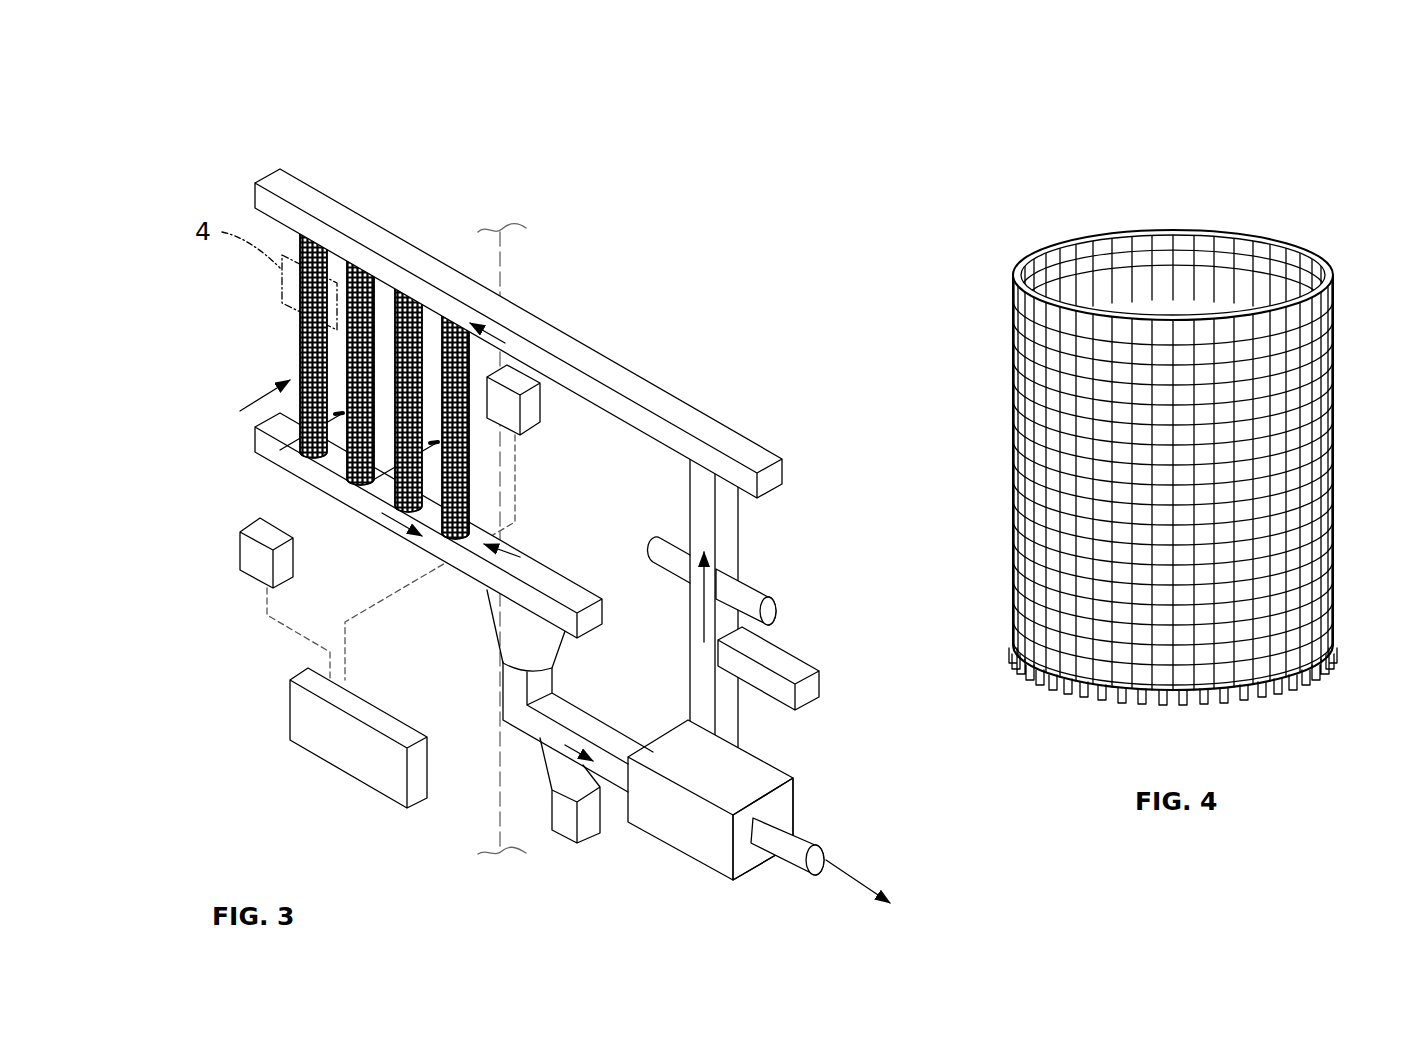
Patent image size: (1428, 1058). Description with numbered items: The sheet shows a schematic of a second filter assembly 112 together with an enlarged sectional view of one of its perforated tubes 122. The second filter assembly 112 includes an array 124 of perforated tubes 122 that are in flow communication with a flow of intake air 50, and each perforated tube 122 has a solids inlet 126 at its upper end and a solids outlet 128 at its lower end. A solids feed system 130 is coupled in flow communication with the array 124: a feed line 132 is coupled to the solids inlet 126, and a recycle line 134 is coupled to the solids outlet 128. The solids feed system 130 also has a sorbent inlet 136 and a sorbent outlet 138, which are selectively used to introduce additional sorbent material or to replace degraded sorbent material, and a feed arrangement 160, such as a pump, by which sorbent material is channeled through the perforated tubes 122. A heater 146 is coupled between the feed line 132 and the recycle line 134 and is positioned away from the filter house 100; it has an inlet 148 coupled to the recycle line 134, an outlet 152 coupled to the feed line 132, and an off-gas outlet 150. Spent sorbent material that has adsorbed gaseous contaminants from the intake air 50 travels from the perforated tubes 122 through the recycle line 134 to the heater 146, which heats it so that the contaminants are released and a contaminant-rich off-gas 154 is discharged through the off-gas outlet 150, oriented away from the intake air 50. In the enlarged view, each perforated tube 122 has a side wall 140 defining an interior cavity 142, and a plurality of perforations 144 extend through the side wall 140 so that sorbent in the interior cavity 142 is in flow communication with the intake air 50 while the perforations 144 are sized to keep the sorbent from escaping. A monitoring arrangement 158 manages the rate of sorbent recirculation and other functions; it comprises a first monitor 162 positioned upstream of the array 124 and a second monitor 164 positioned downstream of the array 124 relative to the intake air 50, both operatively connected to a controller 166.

In FIG. 3, the intake air 50 is at (240, 411).
In FIG. 3, the filter house 100 is at (500, 262).
In FIG. 3, the second filter assembly 112 is at (196, 122).
In FIG. 3, the perforated tube 122 is at (297, 238).
In FIG. 4, the perforated tube 122 is at (1144, 463).
In FIG. 3, the array 124 is at (250, 292).
In FIG. 3, the solids inlet 126 is at (465, 292).
In FIG. 3, the solids outlet 128 is at (502, 548).
In FIG. 3, the solids feed system 130 is at (872, 740).
In FIG. 3, the feed line 132 is at (738, 536).
In FIG. 3, the recycle line 134 is at (525, 722).
In FIG. 3, the sorbent inlet 136 is at (805, 690).
In FIG. 3, the sorbent outlet 138 is at (568, 825).
In FIG. 4, the side wall 140 is at (1298, 683).
In FIG. 4, the interior cavity 142 is at (1070, 228).
In FIG. 4, the perforations 144 is at (1280, 685).
In FIG. 3, the heater 146 is at (755, 775).
In FIG. 3, the inlet 148 is at (648, 718).
In FIG. 3, the off-gas outlet 150 is at (800, 845).
In FIG. 3, the outlet 152 is at (700, 688).
In FIG. 3, the contaminant-rich off-gas 154 is at (870, 887).
In FIG. 3, the monitoring arrangement 158 is at (233, 704).
In FIG. 3, the feed arrangement 160 is at (776, 607).
In FIG. 3, the first monitor 162 is at (252, 553).
In FIG. 3, the second monitor 164 is at (533, 422).
In FIG. 3, the controller 166 is at (386, 788).